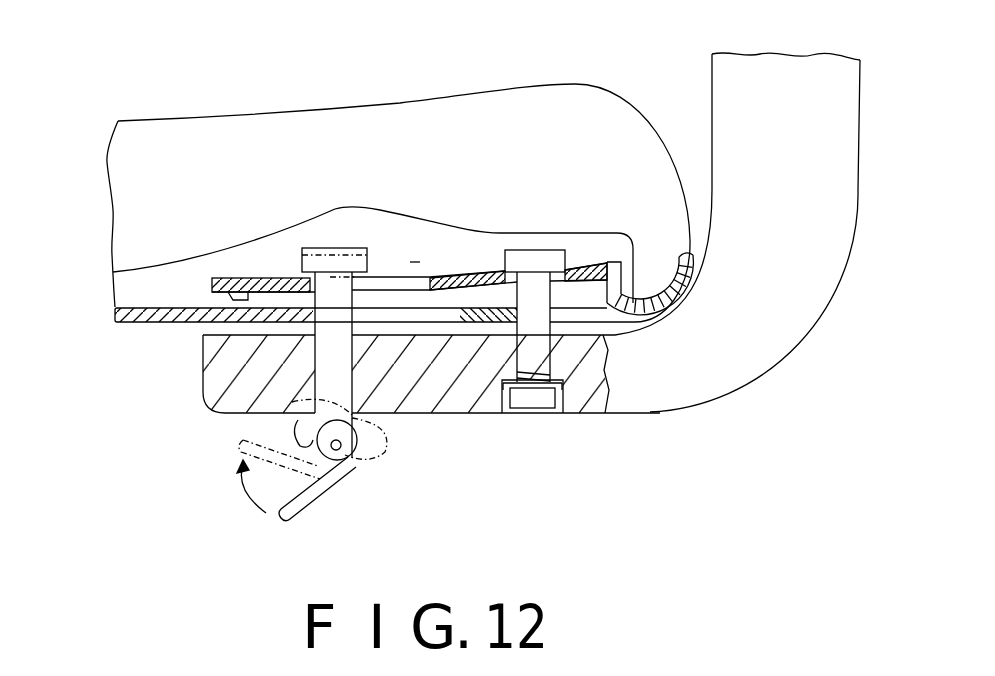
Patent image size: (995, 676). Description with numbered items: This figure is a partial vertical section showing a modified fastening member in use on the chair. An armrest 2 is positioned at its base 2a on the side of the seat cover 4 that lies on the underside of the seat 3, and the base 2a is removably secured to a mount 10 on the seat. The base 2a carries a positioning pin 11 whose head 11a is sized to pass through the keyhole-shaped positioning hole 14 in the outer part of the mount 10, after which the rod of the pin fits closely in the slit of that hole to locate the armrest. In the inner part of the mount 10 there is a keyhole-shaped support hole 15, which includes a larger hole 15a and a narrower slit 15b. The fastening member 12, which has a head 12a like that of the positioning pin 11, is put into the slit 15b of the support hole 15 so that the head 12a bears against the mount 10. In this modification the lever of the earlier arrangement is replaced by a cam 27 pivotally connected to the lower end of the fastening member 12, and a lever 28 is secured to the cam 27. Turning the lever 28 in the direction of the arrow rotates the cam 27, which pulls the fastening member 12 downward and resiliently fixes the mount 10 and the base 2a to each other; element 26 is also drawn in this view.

The armrest 2 is at (730, 89).
The base 2a is at (476, 394).
The seat 3 is at (295, 133).
The seat cover 4 is at (140, 318).
The mount 10 is at (442, 277).
The positioning pin 11 is at (560, 355).
The head 11a is at (512, 270).
The fastening member 12 is at (313, 356).
The head 12a is at (357, 262).
The positioning hole 14 is at (592, 265).
The support hole 15 is at (387, 284).
The hole 15a is at (411, 262).
The slit 15b is at (285, 275).
The spring 26 is at (350, 436).
The cam 27 is at (298, 428).
The lever 28 is at (295, 490).